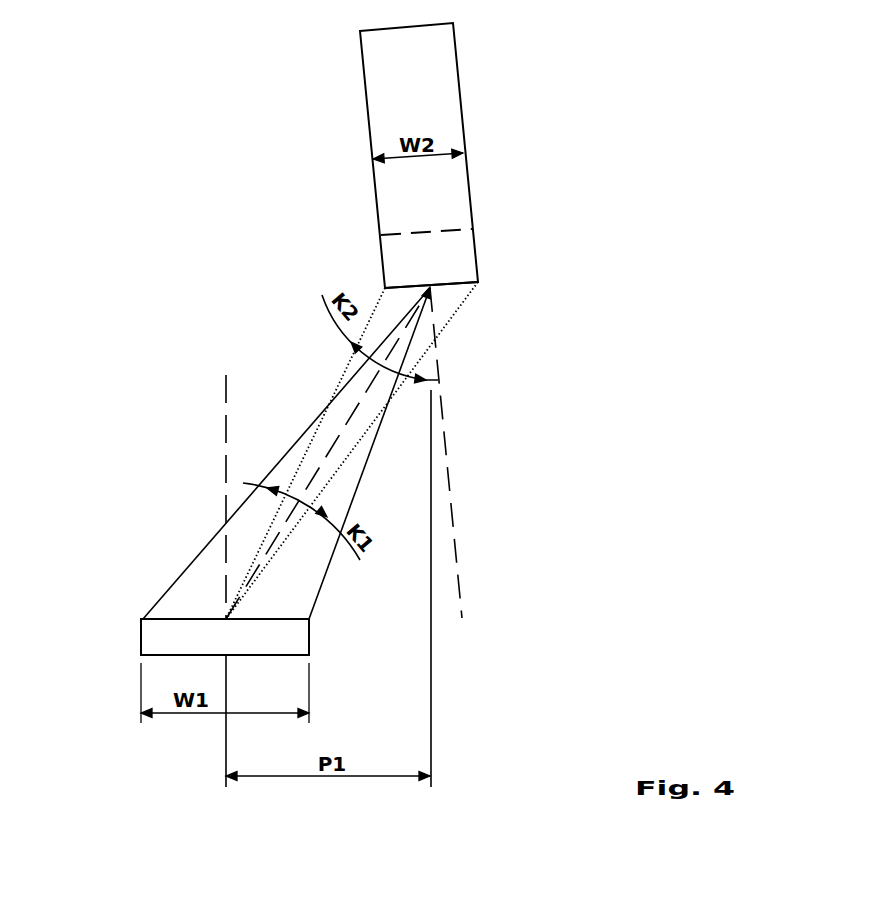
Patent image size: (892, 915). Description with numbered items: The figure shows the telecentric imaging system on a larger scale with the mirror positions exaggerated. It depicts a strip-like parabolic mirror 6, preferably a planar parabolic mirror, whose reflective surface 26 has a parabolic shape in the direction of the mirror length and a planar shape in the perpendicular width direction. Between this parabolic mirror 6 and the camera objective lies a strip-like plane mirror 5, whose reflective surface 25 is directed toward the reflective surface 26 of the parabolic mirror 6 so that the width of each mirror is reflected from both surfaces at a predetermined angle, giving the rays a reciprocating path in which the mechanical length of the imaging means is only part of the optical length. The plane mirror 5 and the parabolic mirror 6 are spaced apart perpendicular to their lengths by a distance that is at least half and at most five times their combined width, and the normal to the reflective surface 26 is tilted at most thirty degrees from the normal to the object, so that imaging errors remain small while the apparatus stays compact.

The strip-like plane mirror 5 is at (170, 638).
The parabolic mirror 6 is at (433, 78).
The reflective surface of the plane mirror 25 is at (177, 618).
The reflective surface of the parabolic mirror 26 is at (452, 285).